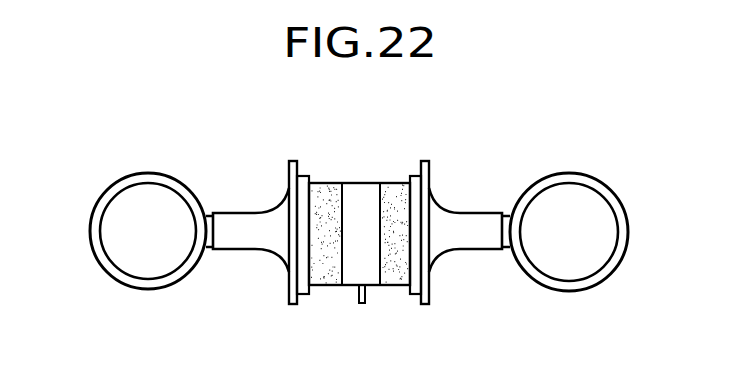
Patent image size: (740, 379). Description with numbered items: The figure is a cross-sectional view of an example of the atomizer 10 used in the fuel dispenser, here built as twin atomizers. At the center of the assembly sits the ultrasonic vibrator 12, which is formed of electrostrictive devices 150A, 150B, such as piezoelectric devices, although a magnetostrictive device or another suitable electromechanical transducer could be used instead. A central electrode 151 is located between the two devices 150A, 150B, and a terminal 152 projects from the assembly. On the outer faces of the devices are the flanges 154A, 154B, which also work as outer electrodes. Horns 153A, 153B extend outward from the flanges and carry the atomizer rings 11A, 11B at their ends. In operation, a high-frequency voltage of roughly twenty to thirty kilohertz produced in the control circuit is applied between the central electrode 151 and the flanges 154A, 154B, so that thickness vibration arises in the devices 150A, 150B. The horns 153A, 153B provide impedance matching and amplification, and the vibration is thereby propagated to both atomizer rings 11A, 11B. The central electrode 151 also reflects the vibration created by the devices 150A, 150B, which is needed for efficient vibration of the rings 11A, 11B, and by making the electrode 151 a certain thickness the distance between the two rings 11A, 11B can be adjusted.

The atomizer 10 is at (359, 243).
The atomizer ring 11A is at (150, 289).
The atomizer ring 11B is at (572, 293).
The ultrasonic vibrator 12 is at (375, 228).
The electrostrictive device 150A is at (323, 285).
The electrostrictive device 150B is at (395, 285).
The central electrode 151 is at (345, 182).
The terminal 152 is at (362, 304).
The horn 153A is at (232, 252).
The horn 153B is at (473, 252).
The flange 154A is at (293, 160).
The flange 154B is at (424, 160).